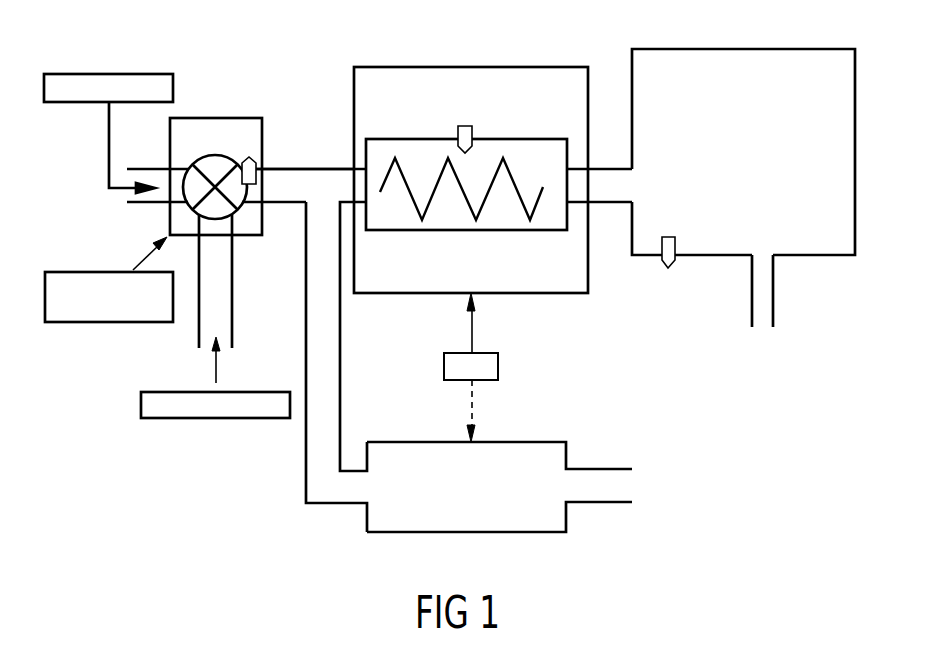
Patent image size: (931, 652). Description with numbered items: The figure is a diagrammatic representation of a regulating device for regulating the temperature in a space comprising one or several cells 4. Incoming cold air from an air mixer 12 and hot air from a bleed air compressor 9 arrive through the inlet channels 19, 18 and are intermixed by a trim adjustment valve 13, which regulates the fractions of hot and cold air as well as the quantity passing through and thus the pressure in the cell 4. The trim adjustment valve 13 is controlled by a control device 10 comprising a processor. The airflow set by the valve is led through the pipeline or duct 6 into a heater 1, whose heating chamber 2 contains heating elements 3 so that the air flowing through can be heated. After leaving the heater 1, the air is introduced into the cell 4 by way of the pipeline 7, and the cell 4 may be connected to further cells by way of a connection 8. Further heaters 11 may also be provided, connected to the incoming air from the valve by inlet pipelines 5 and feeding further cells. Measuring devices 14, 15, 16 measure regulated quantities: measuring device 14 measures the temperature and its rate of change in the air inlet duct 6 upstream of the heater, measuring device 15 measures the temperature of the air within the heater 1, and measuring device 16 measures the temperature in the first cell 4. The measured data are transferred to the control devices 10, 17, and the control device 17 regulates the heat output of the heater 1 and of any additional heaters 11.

The heater 1 is at (448, 65).
The heating chamber 2 is at (537, 147).
The heating elements 3 is at (476, 222).
The cell 4 is at (740, 58).
The inlet pipelines 5 is at (327, 335).
The pipeline or duct 6 is at (320, 178).
The pipeline 7 is at (600, 177).
The connection 8 is at (765, 302).
The bleed air compressor 9 is at (215, 420).
The control device 10 is at (107, 323).
The further heaters 11 is at (390, 450).
The air mixer 12 is at (107, 73).
The trim adjustment valve 13 is at (210, 117).
The measuring device 14 is at (248, 156).
The measuring device 15 is at (463, 126).
The measuring device 16 is at (668, 237).
The control device 17 is at (500, 365).
The inlet channel 18 is at (227, 292).
The inlet channel 19 is at (157, 176).